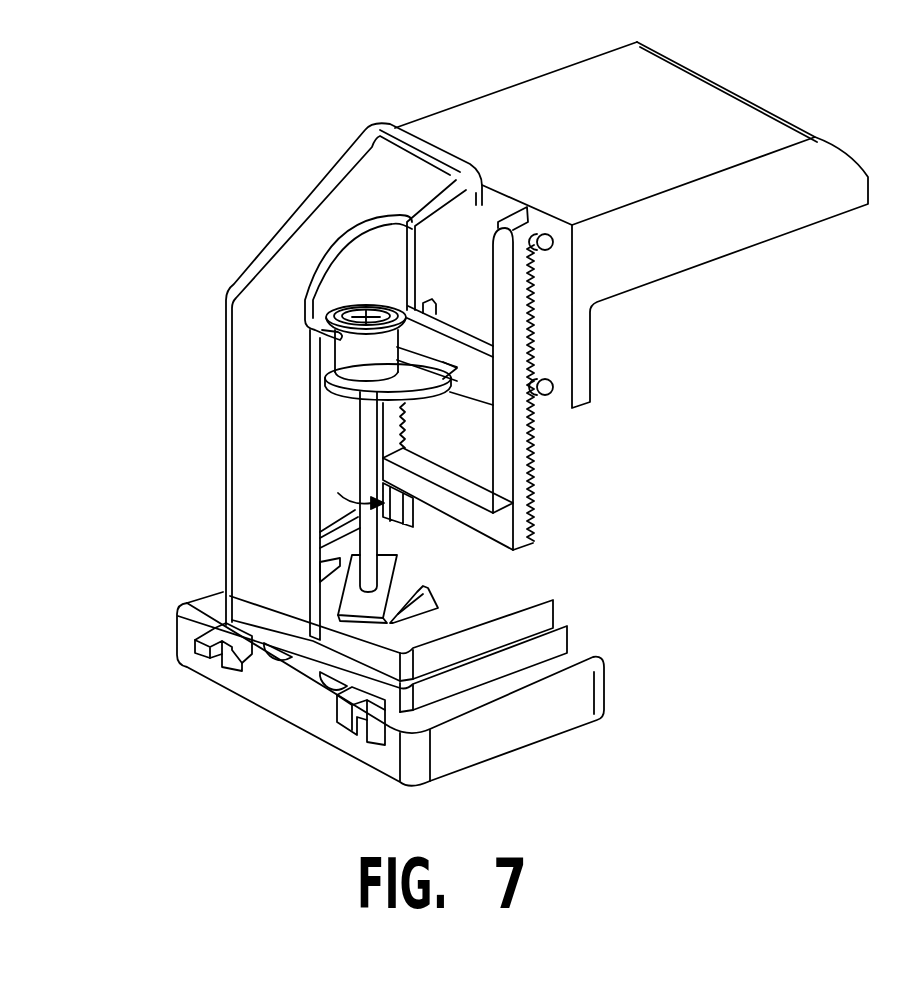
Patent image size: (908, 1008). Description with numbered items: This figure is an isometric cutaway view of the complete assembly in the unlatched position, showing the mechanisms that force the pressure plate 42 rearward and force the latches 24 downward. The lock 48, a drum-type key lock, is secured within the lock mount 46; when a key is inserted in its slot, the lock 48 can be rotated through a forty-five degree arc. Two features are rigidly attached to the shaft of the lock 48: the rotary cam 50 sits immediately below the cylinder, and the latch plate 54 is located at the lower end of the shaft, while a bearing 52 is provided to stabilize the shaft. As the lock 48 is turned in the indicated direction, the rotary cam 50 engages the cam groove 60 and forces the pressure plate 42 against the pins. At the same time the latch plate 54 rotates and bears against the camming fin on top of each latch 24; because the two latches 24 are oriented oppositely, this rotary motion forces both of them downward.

The latch 24 is at (322, 567).
The pressure plate 42 is at (515, 523).
The lock mount 46 is at (335, 250).
The lock 48 is at (330, 322).
The rotary cam 50 is at (435, 387).
The bearing 52 is at (335, 523).
The latch plate 54 is at (340, 600).
The cam groove 60 is at (452, 367).